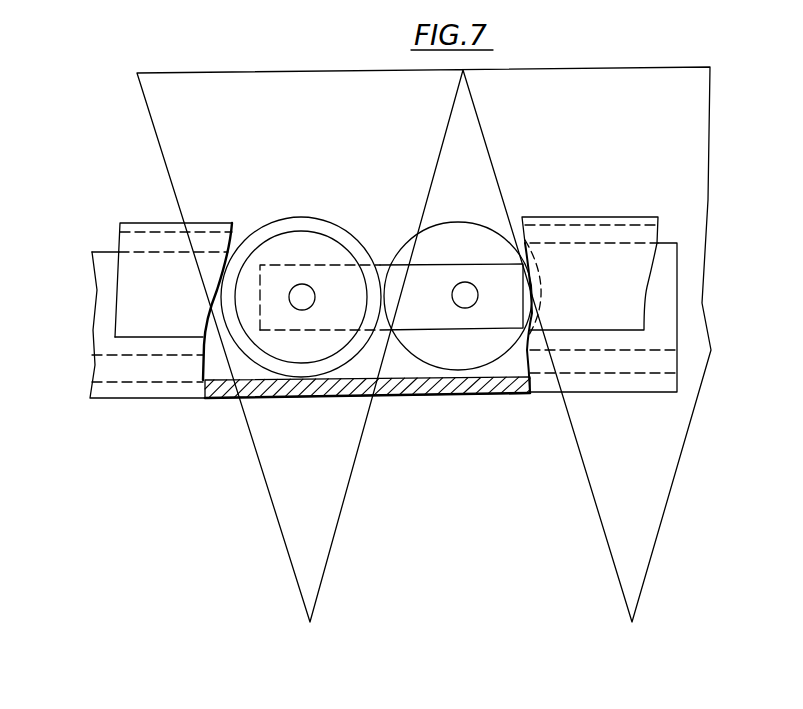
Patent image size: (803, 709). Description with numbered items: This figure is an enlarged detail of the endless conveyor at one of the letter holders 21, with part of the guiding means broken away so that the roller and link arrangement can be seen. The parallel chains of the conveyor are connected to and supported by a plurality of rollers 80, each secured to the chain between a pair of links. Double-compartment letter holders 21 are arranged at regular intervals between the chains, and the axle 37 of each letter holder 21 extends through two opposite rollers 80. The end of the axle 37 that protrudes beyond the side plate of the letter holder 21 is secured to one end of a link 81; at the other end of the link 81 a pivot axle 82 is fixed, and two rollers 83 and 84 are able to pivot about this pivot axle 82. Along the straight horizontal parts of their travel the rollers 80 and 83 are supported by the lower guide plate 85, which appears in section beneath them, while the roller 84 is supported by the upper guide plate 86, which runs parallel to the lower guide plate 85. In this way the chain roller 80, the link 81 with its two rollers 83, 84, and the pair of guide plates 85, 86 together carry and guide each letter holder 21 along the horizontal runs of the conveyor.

The letter holder 21 is at (332, 555).
The axle 37 is at (467, 303).
The roller 80 is at (458, 222).
The link 81 is at (381, 264).
The pivot axle 82 is at (302, 310).
The roller 83 is at (333, 367).
The roller 84 is at (277, 343).
The lower guide plate 85 is at (405, 383).
The upper guide plate 86 is at (593, 217).